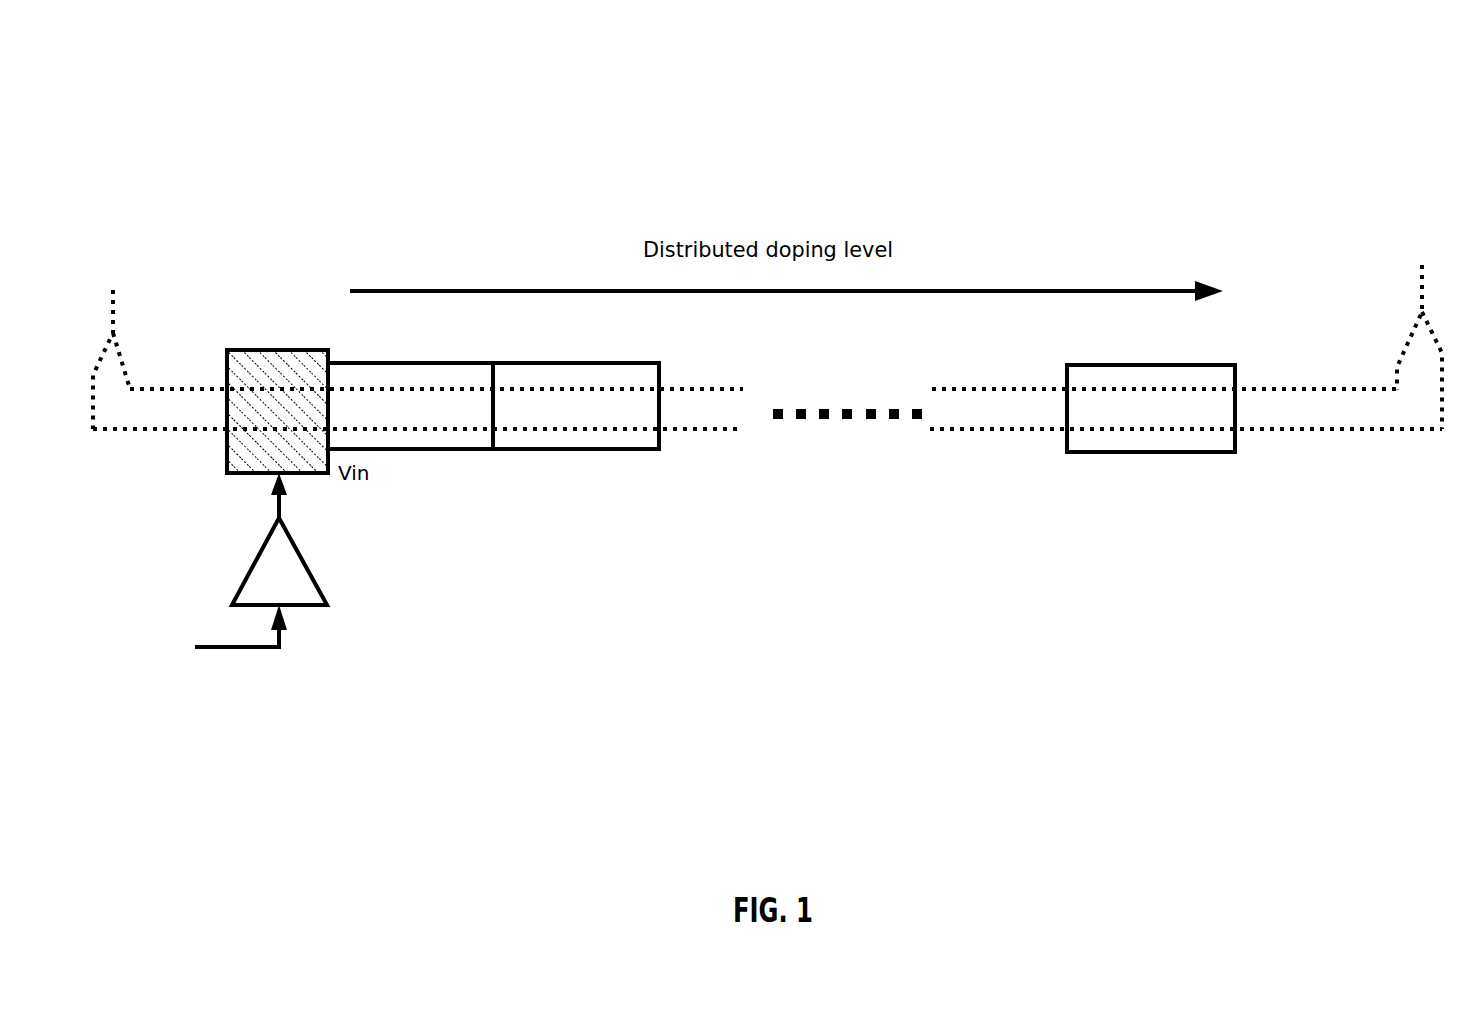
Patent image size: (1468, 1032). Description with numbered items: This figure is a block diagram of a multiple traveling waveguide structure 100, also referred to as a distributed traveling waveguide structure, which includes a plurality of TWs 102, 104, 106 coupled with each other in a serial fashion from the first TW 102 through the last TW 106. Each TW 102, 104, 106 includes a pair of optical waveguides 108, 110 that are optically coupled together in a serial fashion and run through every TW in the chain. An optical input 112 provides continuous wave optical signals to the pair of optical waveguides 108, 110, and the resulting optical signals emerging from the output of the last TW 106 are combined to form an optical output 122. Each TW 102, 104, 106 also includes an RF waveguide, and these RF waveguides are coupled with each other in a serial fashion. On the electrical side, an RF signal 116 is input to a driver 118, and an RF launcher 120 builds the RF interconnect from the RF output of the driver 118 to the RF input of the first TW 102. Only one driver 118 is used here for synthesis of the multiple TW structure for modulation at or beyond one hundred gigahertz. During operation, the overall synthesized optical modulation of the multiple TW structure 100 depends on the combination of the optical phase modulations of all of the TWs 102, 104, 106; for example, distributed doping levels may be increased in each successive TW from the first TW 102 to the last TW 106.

The multiple traveling waveguide structure 100 is at (1140, 110).
The first traveling waveguide (TW-1) 102 is at (470, 452).
The second traveling waveguide (TW-2) 104 is at (610, 452).
The last traveling waveguide (TW-N) 106 is at (1180, 453).
The optical waveguide 108 is at (457, 388).
The optical waveguide 110 is at (430, 430).
The optical input 112 is at (155, 230).
The RF signal 116 is at (237, 650).
The driver 118 is at (260, 548).
The RF launcher 120 is at (322, 350).
The optical output 122 is at (1395, 215).